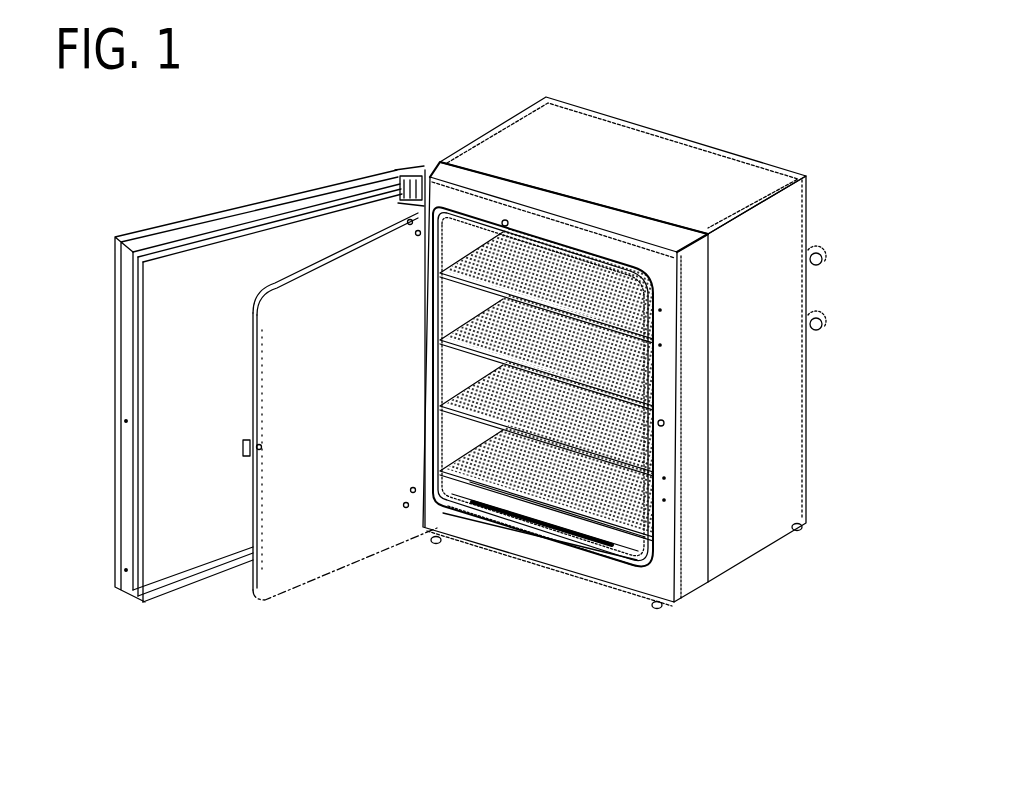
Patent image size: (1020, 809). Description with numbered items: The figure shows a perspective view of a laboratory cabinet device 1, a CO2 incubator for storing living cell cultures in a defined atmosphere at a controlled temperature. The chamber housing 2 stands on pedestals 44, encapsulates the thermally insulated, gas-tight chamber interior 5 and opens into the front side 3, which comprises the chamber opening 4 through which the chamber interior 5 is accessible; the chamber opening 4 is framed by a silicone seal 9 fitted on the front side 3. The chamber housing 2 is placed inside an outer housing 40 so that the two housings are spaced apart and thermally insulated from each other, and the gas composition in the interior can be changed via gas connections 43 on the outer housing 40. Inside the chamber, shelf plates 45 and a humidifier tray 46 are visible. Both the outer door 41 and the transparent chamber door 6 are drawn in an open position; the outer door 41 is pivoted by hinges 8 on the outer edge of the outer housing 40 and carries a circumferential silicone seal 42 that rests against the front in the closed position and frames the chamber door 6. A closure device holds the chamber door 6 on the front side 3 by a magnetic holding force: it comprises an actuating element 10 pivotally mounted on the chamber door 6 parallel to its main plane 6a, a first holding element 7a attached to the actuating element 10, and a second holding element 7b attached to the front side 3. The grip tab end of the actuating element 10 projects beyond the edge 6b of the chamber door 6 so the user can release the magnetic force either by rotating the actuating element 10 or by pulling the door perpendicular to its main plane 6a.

The laboratory cabinet device 1 is at (479, 74).
The chamber housing 2 is at (457, 313).
The front side 3 is at (620, 253).
The chamber opening 4 is at (452, 222).
The chamber interior 5 is at (582, 347).
The chamber door 6 is at (313, 397).
The main plane of the chamber door 6a is at (347, 475).
The edge of the chamber door 6b is at (258, 495).
The first holding element 7a is at (247, 447).
The second holding element 7b is at (664, 423).
The hinge 8 is at (418, 183).
The silicone seal 9 is at (655, 460).
The actuating element 10 is at (247, 451).
The outer housing 40 is at (808, 198).
The outer door 41 is at (125, 592).
The silicone seal 42 is at (190, 590).
The gas connections 43 is at (822, 258).
The pedestals 44 is at (660, 608).
The shelf plates 45 is at (527, 483).
The humidifier tray 46 is at (570, 533).